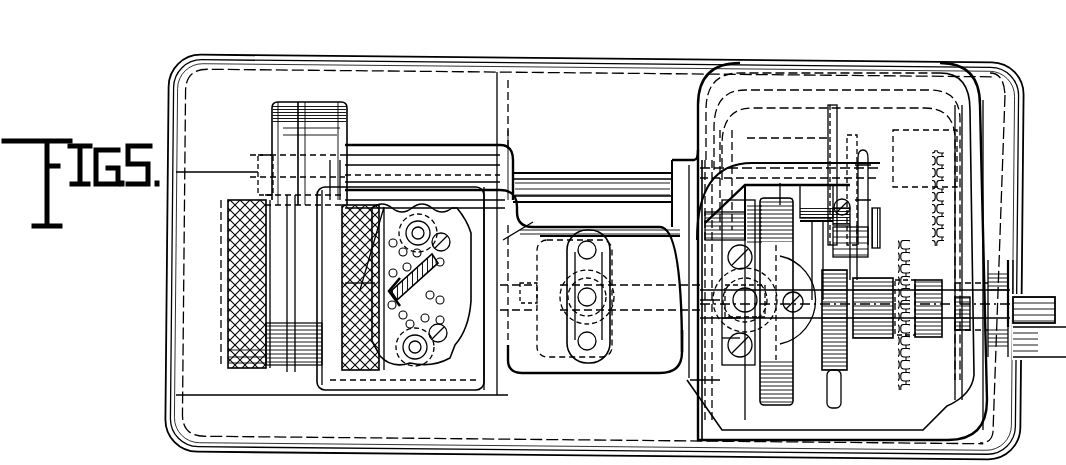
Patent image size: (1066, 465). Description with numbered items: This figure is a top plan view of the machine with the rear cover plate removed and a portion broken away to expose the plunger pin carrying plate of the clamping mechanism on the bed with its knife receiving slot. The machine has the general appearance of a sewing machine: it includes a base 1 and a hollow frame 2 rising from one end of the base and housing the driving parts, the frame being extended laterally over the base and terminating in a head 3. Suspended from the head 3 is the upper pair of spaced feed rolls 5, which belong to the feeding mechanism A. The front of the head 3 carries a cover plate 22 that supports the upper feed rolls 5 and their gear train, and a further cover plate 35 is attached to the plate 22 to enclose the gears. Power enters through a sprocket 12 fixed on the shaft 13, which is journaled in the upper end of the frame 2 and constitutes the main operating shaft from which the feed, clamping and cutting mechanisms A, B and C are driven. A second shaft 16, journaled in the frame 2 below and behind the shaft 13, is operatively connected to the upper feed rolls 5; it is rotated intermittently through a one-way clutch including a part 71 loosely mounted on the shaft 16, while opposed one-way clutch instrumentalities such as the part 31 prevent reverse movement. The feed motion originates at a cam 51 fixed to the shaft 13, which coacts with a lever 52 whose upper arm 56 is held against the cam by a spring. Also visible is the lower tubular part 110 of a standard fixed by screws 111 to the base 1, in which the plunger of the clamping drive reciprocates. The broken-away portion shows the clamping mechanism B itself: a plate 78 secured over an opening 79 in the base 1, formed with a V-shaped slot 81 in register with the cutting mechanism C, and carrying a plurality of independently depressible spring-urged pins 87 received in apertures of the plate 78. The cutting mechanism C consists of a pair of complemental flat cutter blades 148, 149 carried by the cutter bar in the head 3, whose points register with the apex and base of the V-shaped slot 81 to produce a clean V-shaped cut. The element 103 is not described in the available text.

The base 1 is at (648, 98).
The frame 2 is at (993, 52).
The head 3 is at (440, 360).
The upper feed rolls 5 is at (292, 372).
The sprocket 12 is at (922, 340).
The shaft 13 is at (1058, 345).
The shaft 16 is at (586, 182).
The cover plate 22 is at (340, 258).
The one-way clutch instrumentality 31 is at (700, 158).
The cover plate 35 is at (292, 122).
The cam 51 is at (882, 345).
The lever 52 is at (845, 382).
The upper arm 56 is at (826, 382).
The one-way clutch part 71 is at (866, 148).
The plate 78 is at (403, 318).
The opening 79 is at (455, 392).
The V-shaped slot 81 is at (413, 280).
The pins 87 is at (350, 287).
The bracket 103 is at (718, 392).
The lower tubular part 110 is at (725, 322).
The screws 111 is at (725, 338).
The cutter blade 148 is at (417, 313).
The cutter blade 149 is at (400, 292).
The feeding mechanism A is at (228, 287).
The clamping mechanism B is at (780, 403).
The cutting mechanism C is at (430, 235).